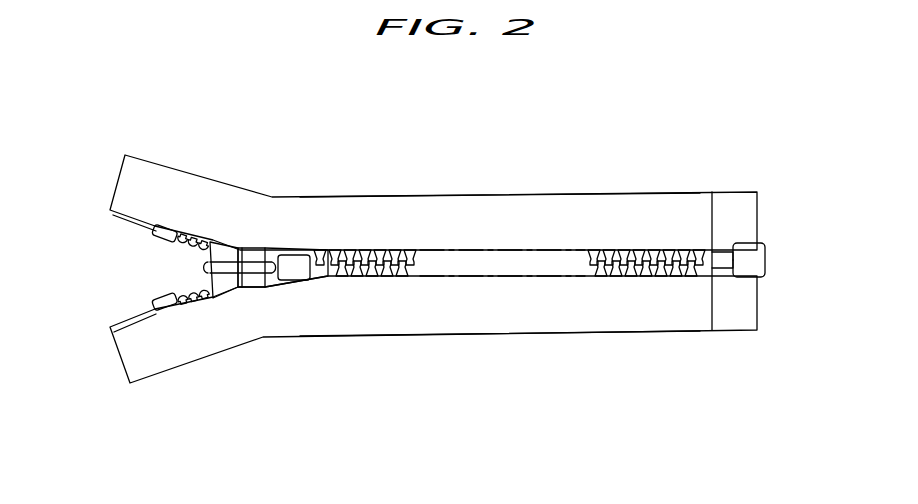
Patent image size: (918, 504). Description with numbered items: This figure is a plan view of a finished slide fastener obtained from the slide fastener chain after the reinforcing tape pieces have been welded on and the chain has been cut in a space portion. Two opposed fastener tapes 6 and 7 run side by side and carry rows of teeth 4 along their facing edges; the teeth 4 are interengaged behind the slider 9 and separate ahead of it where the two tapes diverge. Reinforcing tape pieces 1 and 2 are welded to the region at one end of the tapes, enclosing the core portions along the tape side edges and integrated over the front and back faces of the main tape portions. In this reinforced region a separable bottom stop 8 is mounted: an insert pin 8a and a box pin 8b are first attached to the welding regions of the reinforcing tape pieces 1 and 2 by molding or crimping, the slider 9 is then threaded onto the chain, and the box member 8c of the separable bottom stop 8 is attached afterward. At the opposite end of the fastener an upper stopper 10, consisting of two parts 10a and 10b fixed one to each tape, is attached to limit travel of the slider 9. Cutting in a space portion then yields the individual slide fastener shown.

The reinforcing tape piece 1 is at (735, 215).
The reinforcing tape piece 2 is at (737, 310).
The tooth 4 is at (373, 252).
The fastener tape 6 is at (577, 215).
The fastener tape 7 is at (568, 310).
The separable bottom stop 8 is at (735, 264).
The insert pin 8a is at (720, 288).
The box pin 8b is at (723, 248).
The box member 8c is at (755, 263).
The slider 9 is at (228, 252).
The upper stopper 10 is at (208, 114).
The upper stopper 10a is at (172, 225).
The upper stopper 10b is at (157, 300).